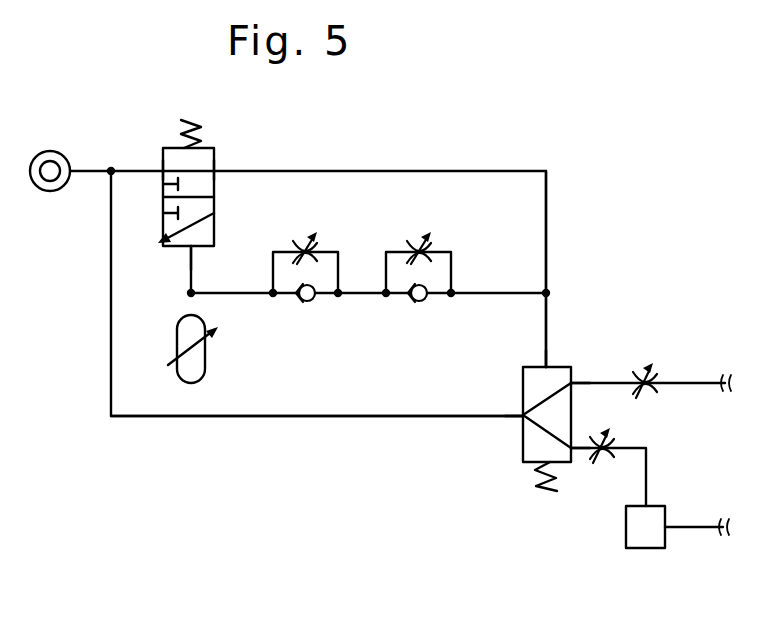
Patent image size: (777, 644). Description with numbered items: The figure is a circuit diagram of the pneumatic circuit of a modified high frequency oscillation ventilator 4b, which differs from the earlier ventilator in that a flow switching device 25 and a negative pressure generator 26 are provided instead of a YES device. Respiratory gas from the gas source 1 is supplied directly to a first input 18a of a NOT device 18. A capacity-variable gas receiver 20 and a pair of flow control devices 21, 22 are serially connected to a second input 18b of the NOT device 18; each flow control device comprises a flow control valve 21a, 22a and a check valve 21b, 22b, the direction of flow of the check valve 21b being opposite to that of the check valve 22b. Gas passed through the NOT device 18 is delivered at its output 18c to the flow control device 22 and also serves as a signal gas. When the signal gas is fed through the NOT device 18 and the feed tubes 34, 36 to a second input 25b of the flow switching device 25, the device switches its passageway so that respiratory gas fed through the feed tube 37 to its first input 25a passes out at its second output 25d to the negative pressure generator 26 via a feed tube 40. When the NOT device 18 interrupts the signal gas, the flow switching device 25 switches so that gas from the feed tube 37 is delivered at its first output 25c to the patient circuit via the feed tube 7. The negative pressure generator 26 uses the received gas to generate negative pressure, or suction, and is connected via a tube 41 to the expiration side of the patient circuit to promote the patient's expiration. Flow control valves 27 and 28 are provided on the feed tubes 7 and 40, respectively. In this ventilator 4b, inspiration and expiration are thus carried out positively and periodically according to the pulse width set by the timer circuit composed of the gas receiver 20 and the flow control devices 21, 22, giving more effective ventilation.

The gas source 1 is at (62, 152).
The high frequency oscillation ventilator 4b is at (461, 124).
The feed tube 7 is at (710, 373).
The NOT device 18 is at (214, 156).
The first input of NOT device 18a is at (163, 170).
The second input of NOT device 18b is at (190, 247).
The output of NOT device 18c is at (214, 172).
The capacity-variable gas receiver 20 is at (205, 368).
The flow control device 21 is at (333, 250).
The flow control valve 21a is at (300, 241).
The check valve 21b is at (308, 301).
The flow control device 22 is at (451, 251).
The flow control valve 22a is at (414, 241).
The check valve 22b is at (420, 301).
The flow switching device 25 is at (557, 367).
The first input of flow switching device 25a is at (523, 415).
The second input of flow switching device 25b is at (540, 367).
The first output of flow switching device 25c is at (572, 382).
The second output of flow switching device 25d is at (573, 452).
The negative pressure generator 26 is at (645, 541).
The flow control valve 27 is at (656, 375).
The flow control valve 28 is at (613, 442).
The feed tube 34 is at (546, 243).
The feed tube 36 is at (547, 320).
The feed tube 37 is at (338, 418).
The feed tube 40 is at (647, 470).
The tube 41 is at (708, 523).